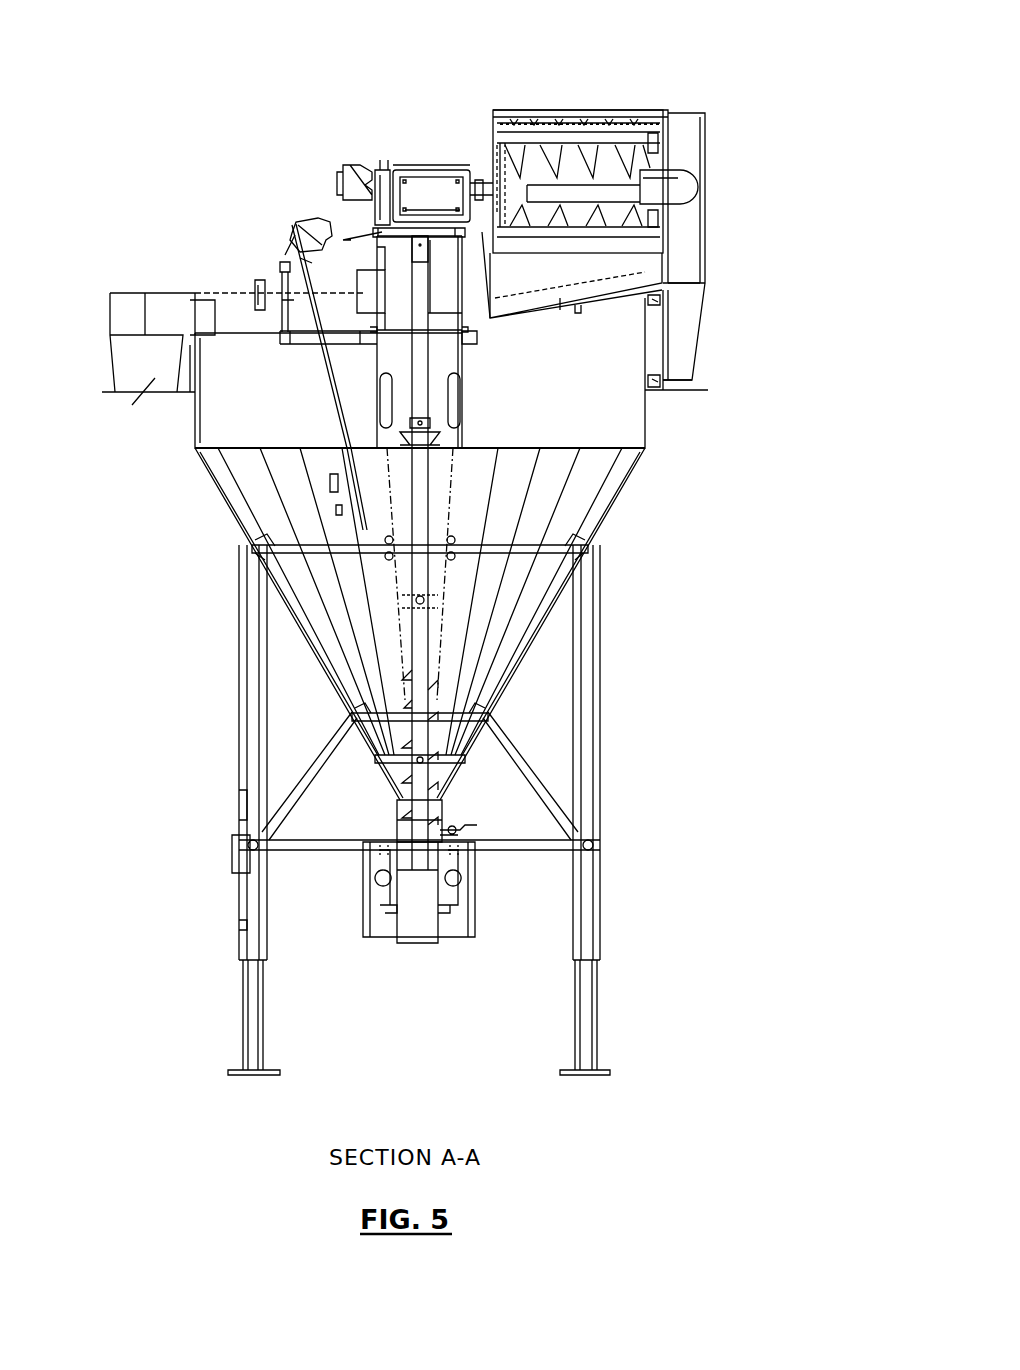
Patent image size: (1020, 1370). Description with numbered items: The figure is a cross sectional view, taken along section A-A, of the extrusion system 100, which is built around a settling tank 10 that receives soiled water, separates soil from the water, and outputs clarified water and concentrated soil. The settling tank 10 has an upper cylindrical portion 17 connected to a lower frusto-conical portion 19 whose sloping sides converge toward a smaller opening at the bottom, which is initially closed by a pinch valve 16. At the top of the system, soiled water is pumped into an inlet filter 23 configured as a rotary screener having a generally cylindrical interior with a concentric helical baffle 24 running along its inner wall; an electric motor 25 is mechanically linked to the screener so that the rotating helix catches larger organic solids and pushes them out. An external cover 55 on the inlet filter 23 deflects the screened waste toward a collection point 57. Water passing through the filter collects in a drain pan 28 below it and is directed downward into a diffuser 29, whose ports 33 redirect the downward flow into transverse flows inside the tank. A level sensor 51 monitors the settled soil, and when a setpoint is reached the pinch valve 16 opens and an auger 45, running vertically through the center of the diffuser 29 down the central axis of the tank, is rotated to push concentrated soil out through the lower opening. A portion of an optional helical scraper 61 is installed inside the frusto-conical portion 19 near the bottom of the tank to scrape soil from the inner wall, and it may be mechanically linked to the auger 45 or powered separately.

The extrusion system 100 is at (662, 28).
The settling tank 10 is at (148, 215).
The level sensor 51 is at (308, 224).
The electric motor 25 is at (361, 164).
The helical baffle 24 is at (543, 162).
The inlet filter 23 is at (620, 110).
The external cover 55 is at (708, 243).
The collection point 57 is at (700, 394).
The drain pan 28 is at (548, 318).
The lower frusto-conical portion 19 is at (621, 499).
The helical scraper 61 is at (486, 722).
The upper cylindrical portion 17 is at (188, 425).
The ports 33 is at (376, 410).
The diffuser 29 is at (374, 432).
The auger 45 is at (400, 795).
The pinch valve 16 is at (393, 920).